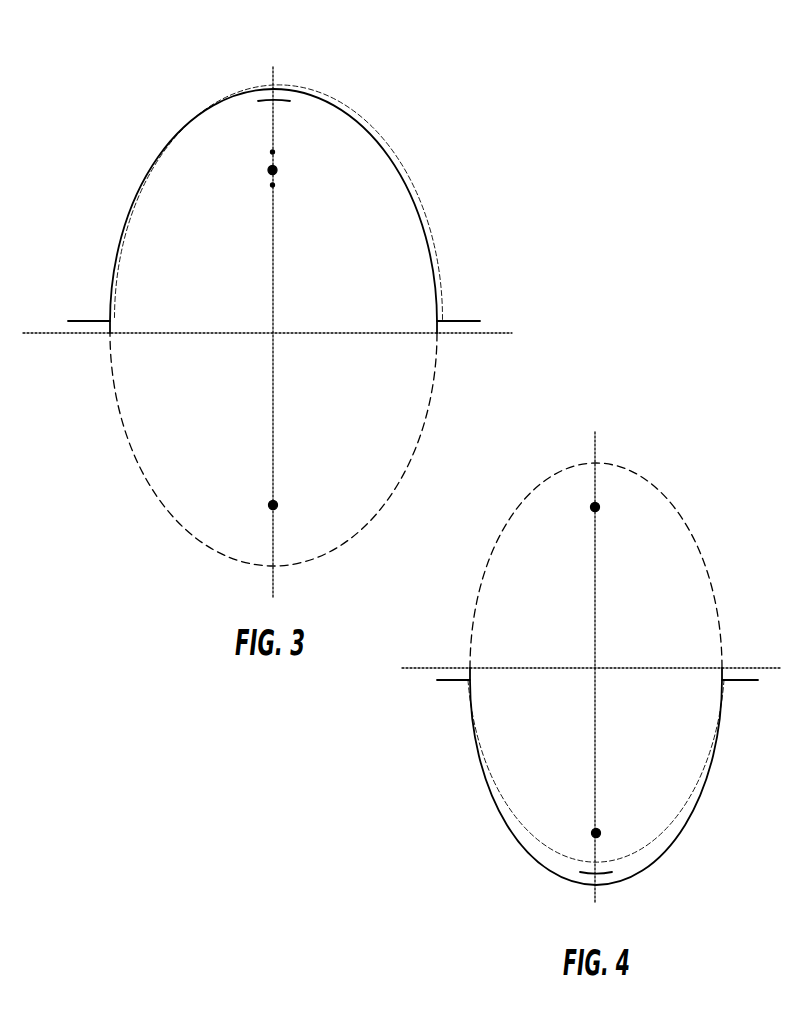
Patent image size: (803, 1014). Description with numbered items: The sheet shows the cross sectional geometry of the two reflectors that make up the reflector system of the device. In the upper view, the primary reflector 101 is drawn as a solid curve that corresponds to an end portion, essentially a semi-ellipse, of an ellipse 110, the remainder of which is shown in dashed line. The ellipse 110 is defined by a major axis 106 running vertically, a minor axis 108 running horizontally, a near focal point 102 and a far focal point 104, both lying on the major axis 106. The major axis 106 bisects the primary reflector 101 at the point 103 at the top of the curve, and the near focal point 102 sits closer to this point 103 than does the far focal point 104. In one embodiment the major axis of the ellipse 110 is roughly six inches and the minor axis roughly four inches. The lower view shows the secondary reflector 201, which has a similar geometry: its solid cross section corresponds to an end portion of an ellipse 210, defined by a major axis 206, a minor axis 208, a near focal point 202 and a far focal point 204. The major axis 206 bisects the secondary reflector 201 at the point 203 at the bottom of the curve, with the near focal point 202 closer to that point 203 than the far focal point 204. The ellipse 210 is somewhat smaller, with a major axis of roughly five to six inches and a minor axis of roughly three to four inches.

In FIG. 3, the primary reflector 101 is at (142, 188).
In FIG. 3, the near focal point 102 is at (270, 171).
In FIG. 3, the point 103 is at (278, 100).
In FIG. 3, the far focal point 104 is at (278, 505).
In FIG. 3, the major axis 106 is at (276, 308).
In FIG. 3, the minor axis 108 is at (241, 335).
In FIG. 3, the ellipse 110 is at (120, 388).
In FIG. 4, the secondary reflector 201 is at (483, 765).
In FIG. 4, the near focal point 202 is at (601, 833).
In FIG. 4, the point 203 is at (594, 878).
In FIG. 4, the far focal point 204 is at (596, 512).
In FIG. 4, the major axis 206 is at (592, 550).
In FIG. 4, the minor axis 208 is at (605, 667).
In FIG. 4, the ellipse 210 is at (657, 490).